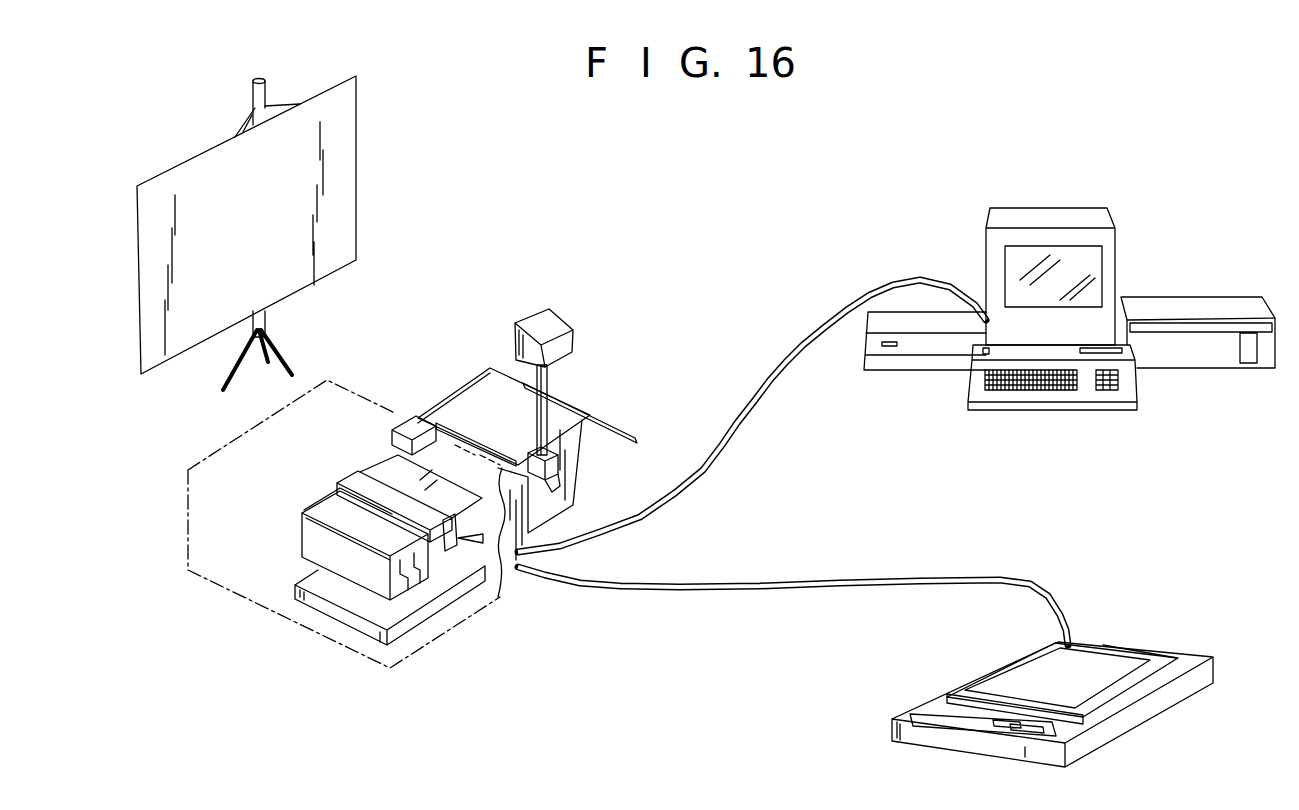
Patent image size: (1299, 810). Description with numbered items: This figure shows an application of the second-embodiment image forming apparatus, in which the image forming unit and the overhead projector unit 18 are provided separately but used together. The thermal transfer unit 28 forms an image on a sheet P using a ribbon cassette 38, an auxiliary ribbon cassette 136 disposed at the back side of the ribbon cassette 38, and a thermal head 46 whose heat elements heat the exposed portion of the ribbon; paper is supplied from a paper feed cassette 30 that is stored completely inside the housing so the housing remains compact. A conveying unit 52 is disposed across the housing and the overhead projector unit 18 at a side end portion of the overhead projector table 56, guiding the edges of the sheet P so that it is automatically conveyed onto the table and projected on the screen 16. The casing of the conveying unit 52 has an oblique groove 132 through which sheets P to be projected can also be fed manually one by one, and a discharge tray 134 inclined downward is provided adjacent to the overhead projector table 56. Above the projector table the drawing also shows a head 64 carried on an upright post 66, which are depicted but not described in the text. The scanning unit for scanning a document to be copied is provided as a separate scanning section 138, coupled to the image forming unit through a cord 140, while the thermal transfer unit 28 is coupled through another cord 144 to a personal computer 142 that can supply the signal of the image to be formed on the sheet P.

The screen 16 is at (351, 197).
The overhead projector unit 18 is at (584, 444).
The thermal transfer unit 28 is at (471, 573).
The paper feed cassette 30 is at (423, 613).
The ribbon cassette 38 is at (360, 485).
The thermal head 46 is at (470, 541).
The conveying unit 52 is at (428, 412).
The overhead projector table 56 is at (498, 425).
The sensor head 64 is at (565, 330).
The post 66 is at (548, 380).
The groove 132 is at (423, 423).
The discharge tray 134 is at (618, 432).
The auxiliary ribbon cassette 136 is at (327, 507).
The scanning section 138 is at (1190, 656).
The cord 140 is at (892, 588).
The personal computer 142 is at (1068, 208).
The cord 144 is at (797, 372).
The sheet P is at (398, 473).